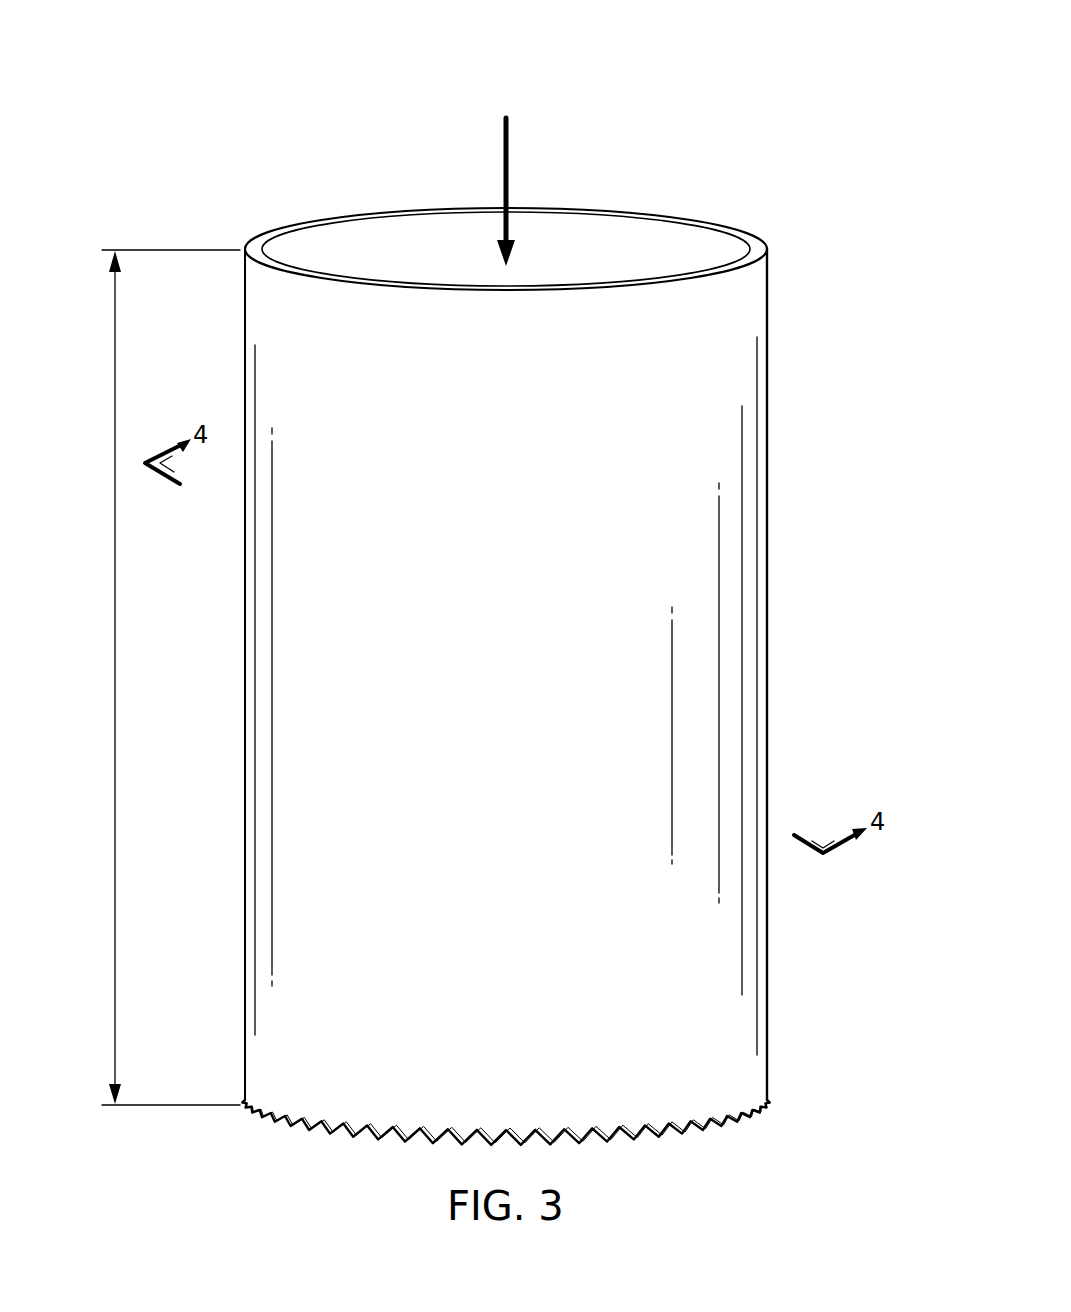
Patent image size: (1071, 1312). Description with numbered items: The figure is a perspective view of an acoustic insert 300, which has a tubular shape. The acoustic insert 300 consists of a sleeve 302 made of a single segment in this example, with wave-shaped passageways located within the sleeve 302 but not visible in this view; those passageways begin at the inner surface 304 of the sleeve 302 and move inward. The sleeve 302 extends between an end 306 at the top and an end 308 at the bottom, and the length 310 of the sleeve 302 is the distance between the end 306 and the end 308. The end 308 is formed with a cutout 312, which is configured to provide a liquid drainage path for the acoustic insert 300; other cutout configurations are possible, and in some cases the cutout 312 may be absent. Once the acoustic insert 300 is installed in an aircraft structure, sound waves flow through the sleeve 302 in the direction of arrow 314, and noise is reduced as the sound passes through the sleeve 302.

The acoustic insert 300 is at (665, 62).
The sleeve 302 is at (768, 640).
The inner surface 304 is at (718, 254).
The end 306 is at (330, 213).
The end 308 is at (268, 1130).
The length 310 is at (114, 679).
The cutout 312 is at (614, 1130).
The arrow 314 is at (509, 150).